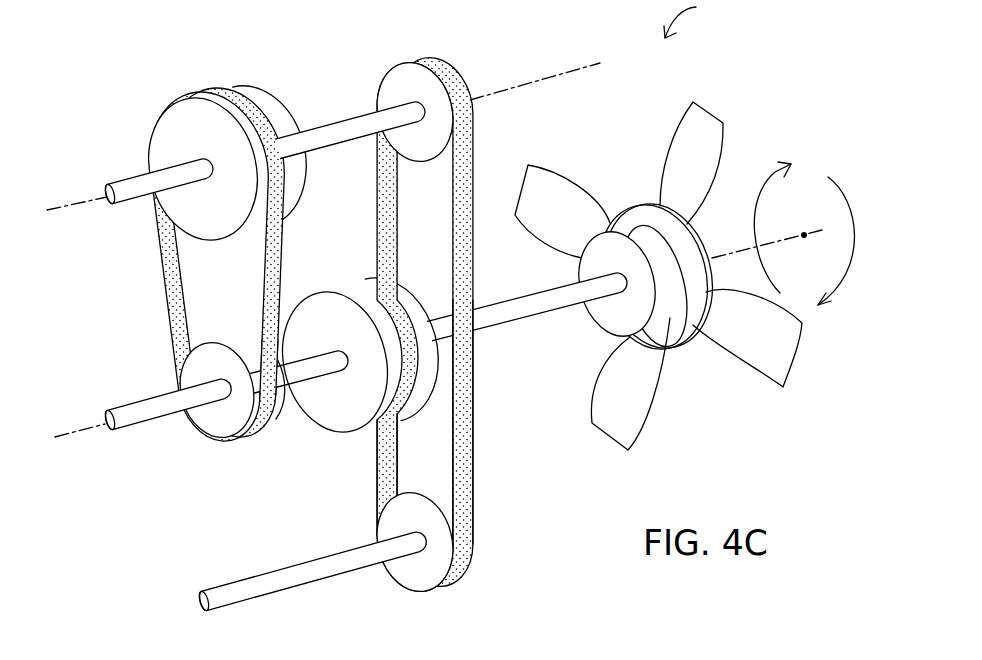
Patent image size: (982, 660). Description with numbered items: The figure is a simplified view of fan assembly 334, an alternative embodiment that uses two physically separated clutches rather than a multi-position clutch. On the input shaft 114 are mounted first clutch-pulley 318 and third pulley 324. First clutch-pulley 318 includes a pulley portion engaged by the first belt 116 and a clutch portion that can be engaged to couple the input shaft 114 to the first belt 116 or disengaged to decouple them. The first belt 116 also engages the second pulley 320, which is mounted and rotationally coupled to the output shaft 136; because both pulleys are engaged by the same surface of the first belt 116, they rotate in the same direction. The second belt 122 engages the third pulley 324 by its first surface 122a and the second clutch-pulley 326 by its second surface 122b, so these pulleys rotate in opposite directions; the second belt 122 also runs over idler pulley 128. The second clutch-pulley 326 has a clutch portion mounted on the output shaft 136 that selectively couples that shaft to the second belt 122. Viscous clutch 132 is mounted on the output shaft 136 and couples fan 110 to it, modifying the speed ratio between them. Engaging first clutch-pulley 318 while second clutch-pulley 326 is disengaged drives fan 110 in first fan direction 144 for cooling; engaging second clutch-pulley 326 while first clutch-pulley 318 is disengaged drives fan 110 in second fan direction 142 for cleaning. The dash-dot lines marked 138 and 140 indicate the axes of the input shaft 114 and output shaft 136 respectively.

The fan 110 is at (668, 282).
The input shaft 114 is at (133, 173).
The first belt 116 is at (168, 268).
The second belt 122 is at (474, 360).
The first surface 122a is at (388, 453).
The second surface 122b is at (460, 393).
The idler pulley 128 is at (435, 562).
The viscous clutch 132 is at (662, 305).
The output shaft 136 is at (350, 398).
The first rotation axis 138 is at (72, 202).
The second rotation axis 140 is at (62, 432).
The second fan direction 142 is at (843, 296).
The first fan direction 144 is at (772, 176).
The first clutch-pulley 318 is at (180, 127).
The second pulley 320 is at (202, 425).
The third pulley 324 is at (398, 80).
The second clutch-pulley 326 is at (325, 412).
The fan assembly 334 is at (703, 19).